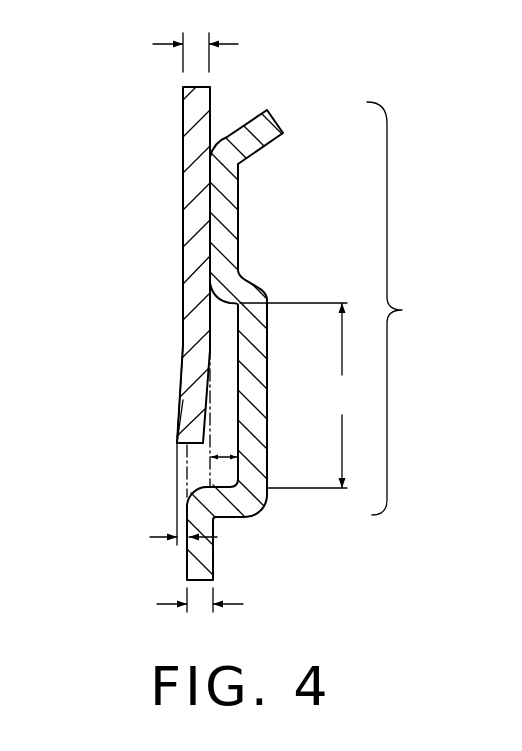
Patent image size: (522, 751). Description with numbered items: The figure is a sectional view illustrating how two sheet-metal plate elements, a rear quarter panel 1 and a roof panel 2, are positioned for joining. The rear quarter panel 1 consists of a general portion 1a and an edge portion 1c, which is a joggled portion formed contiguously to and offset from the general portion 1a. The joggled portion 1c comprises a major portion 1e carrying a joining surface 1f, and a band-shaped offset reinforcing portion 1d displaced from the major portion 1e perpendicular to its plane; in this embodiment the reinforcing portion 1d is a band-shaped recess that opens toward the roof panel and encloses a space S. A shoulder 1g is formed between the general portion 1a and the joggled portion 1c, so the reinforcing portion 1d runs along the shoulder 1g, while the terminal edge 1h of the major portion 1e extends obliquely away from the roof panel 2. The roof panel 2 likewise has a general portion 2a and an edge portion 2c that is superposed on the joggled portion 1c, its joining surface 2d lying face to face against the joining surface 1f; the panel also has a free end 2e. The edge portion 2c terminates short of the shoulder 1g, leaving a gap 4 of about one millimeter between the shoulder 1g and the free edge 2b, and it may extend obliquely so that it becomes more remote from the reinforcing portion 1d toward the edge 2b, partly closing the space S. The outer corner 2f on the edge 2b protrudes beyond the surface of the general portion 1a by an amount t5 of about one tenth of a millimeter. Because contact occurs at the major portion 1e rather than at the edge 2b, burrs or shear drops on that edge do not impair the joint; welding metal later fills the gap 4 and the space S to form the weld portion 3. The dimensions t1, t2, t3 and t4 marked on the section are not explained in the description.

The rear quarter panel 1 is at (259, 348).
The general portion 1a is at (186, 570).
The joggled portion 1c is at (407, 308).
The offset reinforcing portion 1d is at (257, 334).
The major portion 1e is at (228, 235).
The joining surface 1f is at (209, 208).
The shoulder 1g is at (190, 499).
The terminal edge 1h is at (277, 126).
The roof panel 2 is at (202, 284).
The general portion 2a is at (193, 107).
The free edge 2b is at (198, 447).
The edge portion 2c is at (193, 392).
The joining surface 2d is at (213, 180).
The free end 2e is at (190, 408).
The outer corner 2f is at (177, 444).
The weld portion 3 is at (155, 367).
The gap 4 is at (198, 475).
The space S is at (225, 340).
The thickness t1 is at (200, 615).
The thickness t2 is at (195, 36).
The height t3 is at (299, 395).
The gap t4 is at (226, 473).
The protrusion amount t5 is at (169, 540).